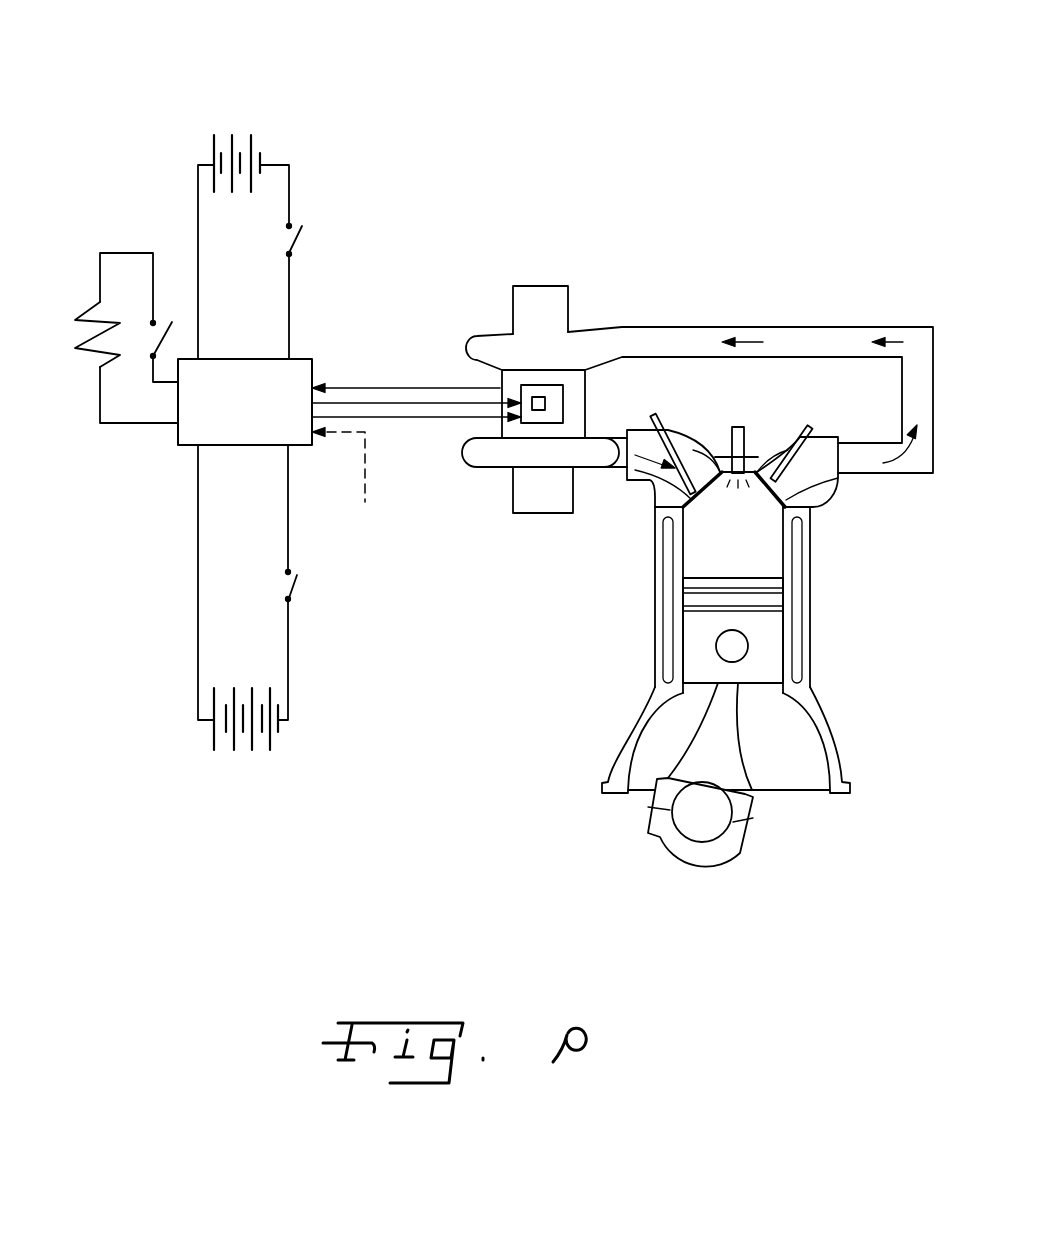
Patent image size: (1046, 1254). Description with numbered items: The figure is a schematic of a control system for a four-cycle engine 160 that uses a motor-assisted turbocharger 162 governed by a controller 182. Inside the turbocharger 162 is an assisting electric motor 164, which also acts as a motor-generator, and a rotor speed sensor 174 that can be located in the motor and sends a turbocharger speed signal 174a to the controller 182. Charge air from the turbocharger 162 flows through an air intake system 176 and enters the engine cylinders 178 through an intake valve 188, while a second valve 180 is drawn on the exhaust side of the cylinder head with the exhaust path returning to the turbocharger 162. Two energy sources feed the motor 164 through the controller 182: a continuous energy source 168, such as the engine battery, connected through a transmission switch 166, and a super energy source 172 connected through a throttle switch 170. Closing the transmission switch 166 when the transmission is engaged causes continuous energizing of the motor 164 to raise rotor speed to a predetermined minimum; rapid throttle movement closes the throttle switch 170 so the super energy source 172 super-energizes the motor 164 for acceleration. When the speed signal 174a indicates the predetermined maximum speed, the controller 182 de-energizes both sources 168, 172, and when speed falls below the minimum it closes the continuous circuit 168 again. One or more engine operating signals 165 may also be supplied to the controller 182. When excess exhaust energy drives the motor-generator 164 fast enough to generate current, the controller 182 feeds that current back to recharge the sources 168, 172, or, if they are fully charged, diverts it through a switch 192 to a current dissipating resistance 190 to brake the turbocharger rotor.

The four-cycle engine 160 is at (549, 722).
The motor-assisted turbocharger 162 is at (488, 285).
The assisting motor 164 is at (550, 420).
The engine operating signals 165 is at (365, 500).
The transmission switch 166 is at (297, 592).
The continuous energy source 168 is at (258, 762).
The throttle switch 170 is at (302, 233).
The super energy source 172 is at (244, 104).
The rotor speed sensor 174 is at (538, 399).
The turbocharger speed signal 174a is at (350, 387).
The air intake system 176 is at (610, 470).
The engine cylinders 178 is at (763, 555).
The exhaust valve 180 is at (803, 427).
The controller 182 is at (177, 438).
The intake valve 188 is at (663, 421).
The current dissipating resistance 190 is at (82, 312).
The switch 192 is at (172, 322).